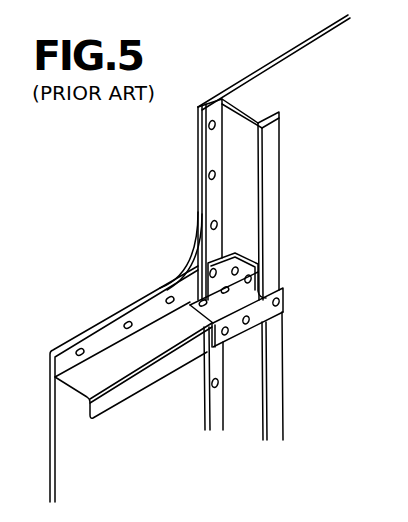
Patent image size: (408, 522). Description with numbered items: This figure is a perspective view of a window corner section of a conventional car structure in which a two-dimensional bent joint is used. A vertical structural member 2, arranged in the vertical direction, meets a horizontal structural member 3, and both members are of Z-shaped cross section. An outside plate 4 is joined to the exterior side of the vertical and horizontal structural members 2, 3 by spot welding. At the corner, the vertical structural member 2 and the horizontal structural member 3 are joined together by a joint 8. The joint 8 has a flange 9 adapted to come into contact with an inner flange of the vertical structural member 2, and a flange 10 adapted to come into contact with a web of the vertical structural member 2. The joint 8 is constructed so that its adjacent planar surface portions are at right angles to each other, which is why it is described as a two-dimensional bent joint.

The vertical structural member 2 is at (282, 224).
The horizontal structural member 3 is at (148, 388).
The outside plate 4 is at (184, 251).
The joint 8 is at (241, 336).
The flange 9 is at (286, 296).
The flange 10 is at (235, 255).